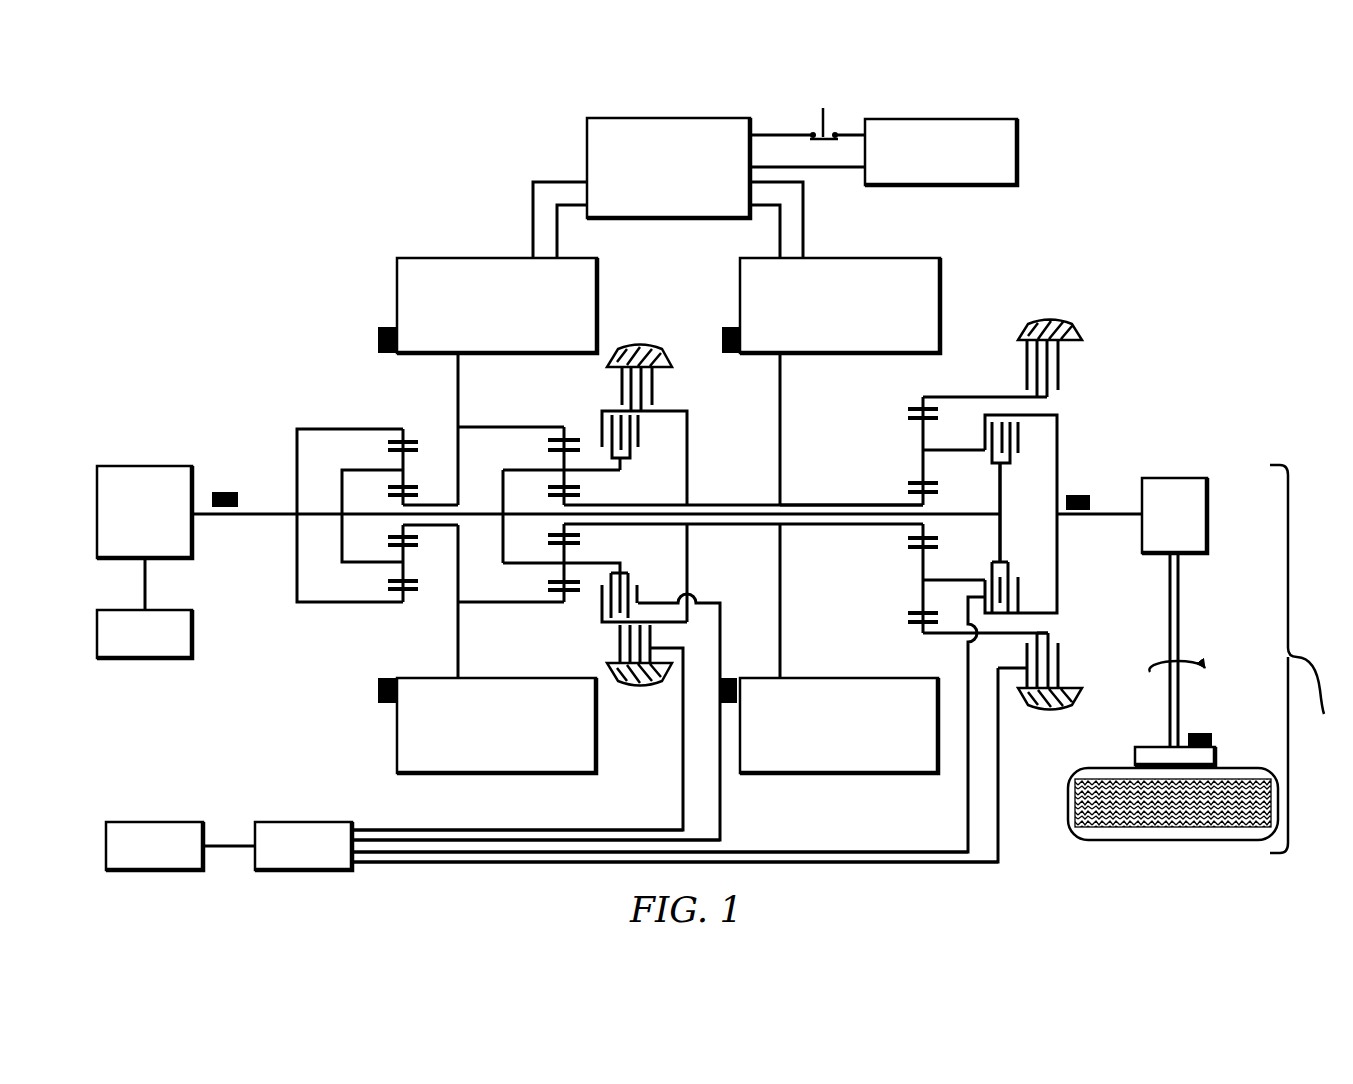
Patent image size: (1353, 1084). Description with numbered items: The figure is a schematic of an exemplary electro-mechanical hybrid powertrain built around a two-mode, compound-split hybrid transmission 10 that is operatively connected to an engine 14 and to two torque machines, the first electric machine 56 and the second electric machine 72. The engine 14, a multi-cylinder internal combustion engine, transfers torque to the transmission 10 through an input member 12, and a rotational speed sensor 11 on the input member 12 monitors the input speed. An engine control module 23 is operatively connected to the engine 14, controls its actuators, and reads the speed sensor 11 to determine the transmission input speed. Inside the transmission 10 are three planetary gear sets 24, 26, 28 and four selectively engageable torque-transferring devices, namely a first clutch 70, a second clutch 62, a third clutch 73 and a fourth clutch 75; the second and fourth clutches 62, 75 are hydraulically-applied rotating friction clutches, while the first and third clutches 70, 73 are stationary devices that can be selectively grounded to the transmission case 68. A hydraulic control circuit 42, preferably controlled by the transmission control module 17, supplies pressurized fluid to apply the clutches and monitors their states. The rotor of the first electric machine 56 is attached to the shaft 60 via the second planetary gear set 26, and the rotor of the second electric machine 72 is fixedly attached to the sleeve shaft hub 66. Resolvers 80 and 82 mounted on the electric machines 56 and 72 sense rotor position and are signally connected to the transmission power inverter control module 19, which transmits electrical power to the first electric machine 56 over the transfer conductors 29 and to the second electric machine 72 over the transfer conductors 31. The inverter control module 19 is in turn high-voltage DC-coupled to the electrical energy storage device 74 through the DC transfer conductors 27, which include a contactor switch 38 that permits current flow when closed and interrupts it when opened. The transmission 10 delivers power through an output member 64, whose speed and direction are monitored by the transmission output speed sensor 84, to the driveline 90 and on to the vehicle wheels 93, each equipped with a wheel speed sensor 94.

The electro-mechanical hybrid transmission 10 is at (358, 220).
The rotational speed sensor 11 is at (225, 490).
The input member 12 is at (272, 510).
The engine 14 is at (148, 465).
The transmission control module 17 is at (145, 820).
The transmission power inverter control module 19 is at (586, 133).
The engine control module 23 is at (192, 648).
The first planetary gear set 24 is at (395, 424).
The second planetary gear set 26 is at (555, 424).
The DC transfer conductors 27 is at (767, 133).
The third planetary gear set 28 is at (912, 398).
The transfer conductors 29 is at (532, 214).
The transfer conductors 31 is at (803, 212).
The contactor switch 38 is at (826, 120).
The hydraulic control circuit 42 is at (270, 820).
The first electric machine 56 is at (396, 290).
The shaft 60 is at (975, 512).
The clutch C2 62 is at (1020, 458).
The output member 64 is at (1113, 512).
The sleeve shaft hub 66 is at (818, 502).
The transmission case 68 is at (642, 346).
The clutch C1 70 is at (1016, 385).
The second electric machine 72 is at (941, 275).
The clutch C3 73 is at (656, 390).
The electrical energy storage device 74 is at (1019, 140).
The clutch C4 75 is at (640, 440).
The resolver 80 is at (377, 340).
The resolver 82 is at (731, 326).
The transmission output speed sensor 84 is at (1082, 494).
The driveline 90 is at (1207, 659).
The vehicle wheel 93 is at (1134, 756).
The wheel speed sensor 94 is at (1202, 732).